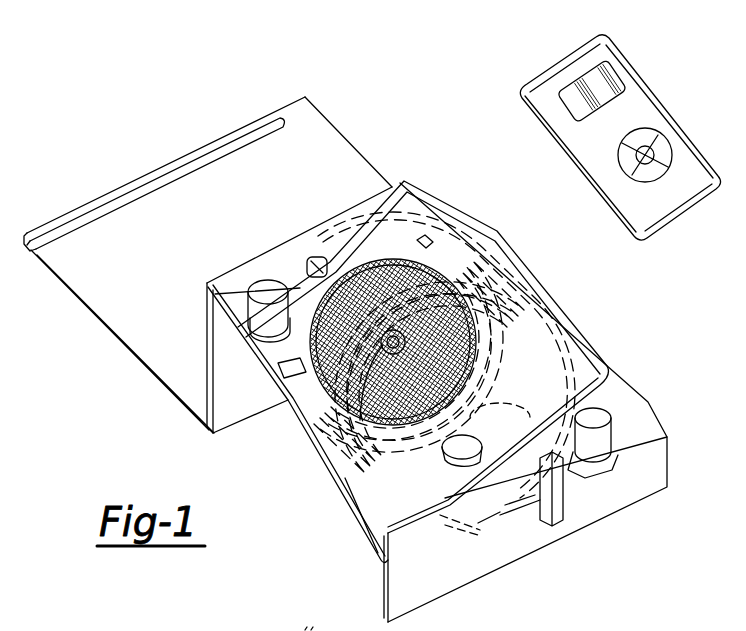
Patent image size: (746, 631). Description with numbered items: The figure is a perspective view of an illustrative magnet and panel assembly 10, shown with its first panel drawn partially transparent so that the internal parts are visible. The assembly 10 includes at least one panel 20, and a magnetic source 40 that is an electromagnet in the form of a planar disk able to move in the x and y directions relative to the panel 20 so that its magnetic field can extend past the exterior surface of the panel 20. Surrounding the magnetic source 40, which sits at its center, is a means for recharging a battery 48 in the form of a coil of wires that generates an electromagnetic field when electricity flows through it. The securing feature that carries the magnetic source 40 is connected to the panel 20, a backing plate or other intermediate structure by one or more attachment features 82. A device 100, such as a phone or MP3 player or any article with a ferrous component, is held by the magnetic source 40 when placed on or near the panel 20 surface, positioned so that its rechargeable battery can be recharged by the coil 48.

The magnet and panel assembly 10 is at (441, 155).
The panel 20 is at (560, 338).
The magnetic source 40 is at (300, 426).
The means for recharging a battery 48 is at (362, 458).
The attachment feature 82 is at (272, 290).
The device 100 is at (572, 72).